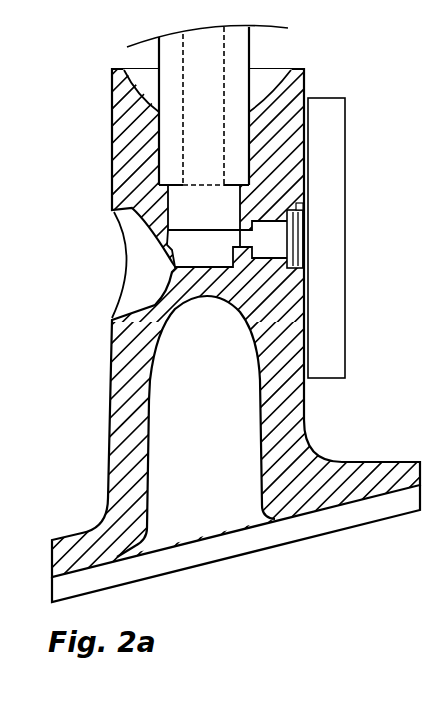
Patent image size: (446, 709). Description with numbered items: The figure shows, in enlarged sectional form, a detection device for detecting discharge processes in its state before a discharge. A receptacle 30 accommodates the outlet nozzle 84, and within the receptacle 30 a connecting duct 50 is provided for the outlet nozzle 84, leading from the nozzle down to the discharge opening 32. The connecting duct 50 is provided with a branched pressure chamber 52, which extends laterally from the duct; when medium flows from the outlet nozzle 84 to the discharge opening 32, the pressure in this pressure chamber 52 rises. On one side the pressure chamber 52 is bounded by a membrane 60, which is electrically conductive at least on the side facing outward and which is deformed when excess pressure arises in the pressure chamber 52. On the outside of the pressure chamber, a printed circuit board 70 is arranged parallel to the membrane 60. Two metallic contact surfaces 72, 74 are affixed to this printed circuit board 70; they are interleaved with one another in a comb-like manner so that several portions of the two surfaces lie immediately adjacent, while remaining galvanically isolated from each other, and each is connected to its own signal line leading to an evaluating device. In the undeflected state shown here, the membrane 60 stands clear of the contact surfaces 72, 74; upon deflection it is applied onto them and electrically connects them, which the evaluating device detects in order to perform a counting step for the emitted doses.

The receptacle 30 is at (156, 501).
The discharge opening 32 is at (128, 275).
The connecting duct 50 is at (205, 213).
The pressure chamber 52 is at (270, 233).
The membrane 60 is at (298, 230).
The printed circuit board 70 is at (333, 340).
The contact surface 72 is at (307, 250).
The contact surface 74 is at (307, 250).
The outlet nozzle 84 is at (177, 120).